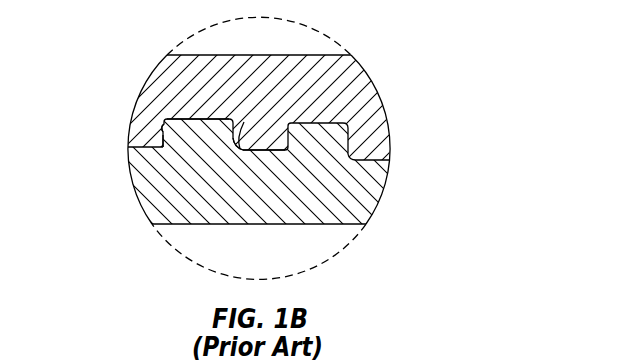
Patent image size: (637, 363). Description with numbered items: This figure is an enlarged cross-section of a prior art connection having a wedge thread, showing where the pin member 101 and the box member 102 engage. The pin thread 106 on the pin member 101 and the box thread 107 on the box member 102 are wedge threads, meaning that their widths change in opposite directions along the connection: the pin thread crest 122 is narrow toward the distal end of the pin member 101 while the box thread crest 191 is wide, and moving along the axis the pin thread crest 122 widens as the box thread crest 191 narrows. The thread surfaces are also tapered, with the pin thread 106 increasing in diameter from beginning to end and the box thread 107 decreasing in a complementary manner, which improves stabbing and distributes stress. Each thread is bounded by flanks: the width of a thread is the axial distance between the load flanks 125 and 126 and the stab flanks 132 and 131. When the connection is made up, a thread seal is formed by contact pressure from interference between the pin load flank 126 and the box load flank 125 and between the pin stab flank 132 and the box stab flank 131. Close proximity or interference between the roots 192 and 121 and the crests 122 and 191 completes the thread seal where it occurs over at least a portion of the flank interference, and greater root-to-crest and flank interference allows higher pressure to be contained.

The pin member 101 is at (352, 207).
The box member 102 is at (352, 91).
The pin thread 106 is at (210, 150).
The box thread 107 is at (278, 140).
The root 121 is at (190, 117).
The pin thread crest 122 is at (213, 117).
The box load flank 125 is at (165, 125).
The pin load flank 126 is at (163, 143).
The box stab flank 131 is at (228, 142).
The pin stab flank 132 is at (244, 122).
The box thread crest 191 is at (250, 150).
The root 192 is at (265, 150).